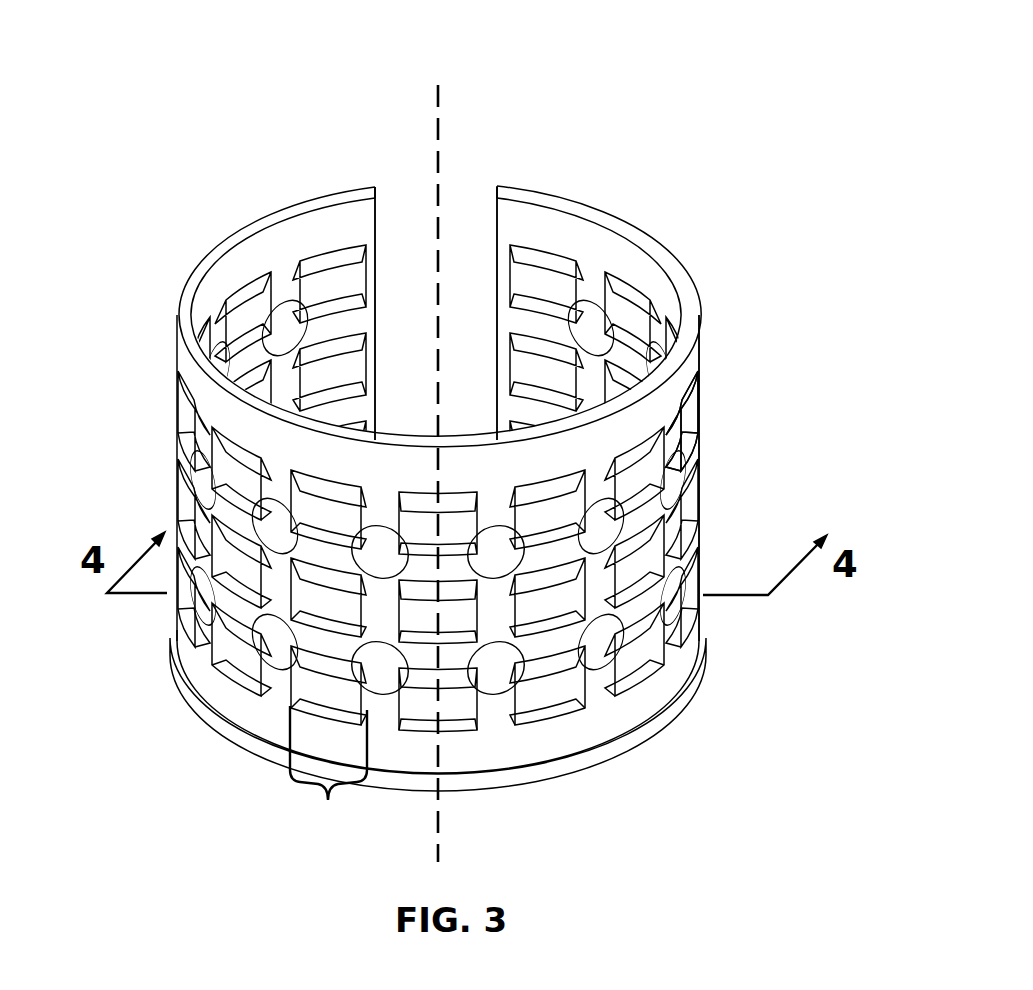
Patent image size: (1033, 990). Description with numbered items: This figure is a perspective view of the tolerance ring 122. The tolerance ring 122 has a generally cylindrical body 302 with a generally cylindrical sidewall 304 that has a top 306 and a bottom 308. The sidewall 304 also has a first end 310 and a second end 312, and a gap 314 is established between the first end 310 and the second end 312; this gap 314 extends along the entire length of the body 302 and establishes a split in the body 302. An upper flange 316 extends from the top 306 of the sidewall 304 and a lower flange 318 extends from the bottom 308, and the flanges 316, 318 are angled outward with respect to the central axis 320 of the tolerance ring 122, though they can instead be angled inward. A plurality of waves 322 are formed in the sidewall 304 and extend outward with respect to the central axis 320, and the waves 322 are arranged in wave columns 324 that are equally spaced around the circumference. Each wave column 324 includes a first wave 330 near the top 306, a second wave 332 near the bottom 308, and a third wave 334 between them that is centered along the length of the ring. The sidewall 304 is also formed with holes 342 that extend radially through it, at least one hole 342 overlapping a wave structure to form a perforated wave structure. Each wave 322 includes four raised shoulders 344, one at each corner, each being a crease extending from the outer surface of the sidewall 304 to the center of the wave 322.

The tolerance ring 122 is at (690, 100).
The body 302 is at (513, 413).
The sidewall 304 is at (515, 501).
The top 306 is at (746, 410).
The bottom 308 is at (481, 706).
The first end 310 is at (302, 263).
The second end 312 is at (578, 264).
The gap 314 is at (403, 234).
The upper flange 316 is at (405, 307).
The lower flange 318 is at (438, 744).
The central axis 320 is at (501, 449).
The waves 322 is at (769, 478).
The wave columns 324 is at (328, 774).
The first wave 330 is at (383, 463).
The second wave 332 is at (391, 640).
The third wave 334 is at (383, 551).
The holes 342 is at (502, 627).
The raised shoulder 344 is at (458, 709).